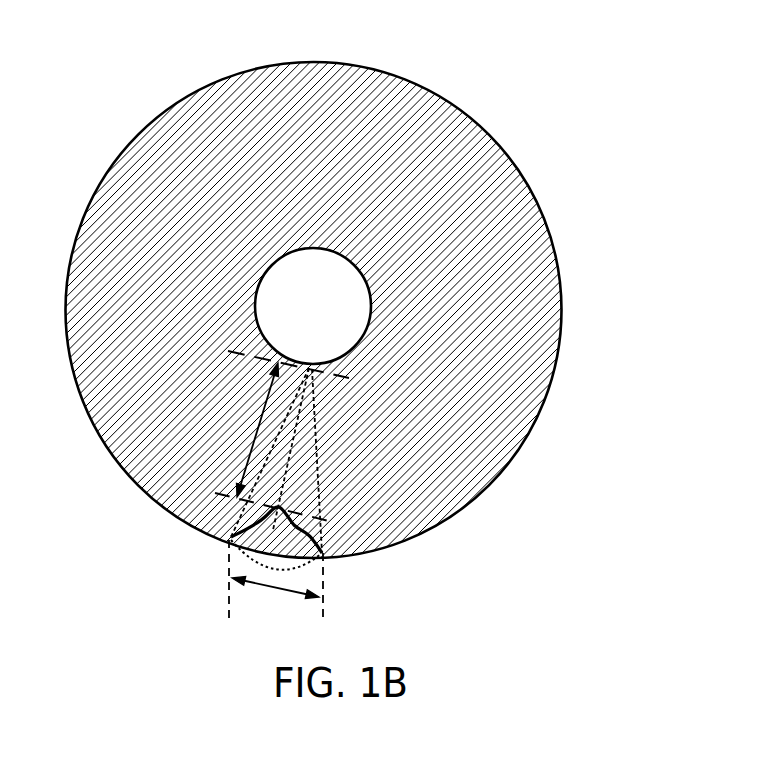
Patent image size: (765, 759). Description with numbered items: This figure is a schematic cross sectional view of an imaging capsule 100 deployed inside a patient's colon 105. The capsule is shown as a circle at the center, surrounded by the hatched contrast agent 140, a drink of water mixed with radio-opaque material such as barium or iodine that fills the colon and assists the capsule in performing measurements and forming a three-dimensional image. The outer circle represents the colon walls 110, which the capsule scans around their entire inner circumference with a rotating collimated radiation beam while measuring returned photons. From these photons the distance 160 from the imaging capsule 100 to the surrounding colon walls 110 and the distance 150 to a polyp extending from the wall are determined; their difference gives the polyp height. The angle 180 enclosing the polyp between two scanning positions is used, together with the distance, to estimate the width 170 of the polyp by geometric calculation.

The imaging capsule 100 is at (371, 309).
The colon 105 is at (382, 379).
The colon walls 110 is at (548, 222).
The contrast agent 140 is at (333, 160).
The distance to polyp 150 is at (250, 450).
The distance to colon walls 160 is at (287, 466).
The width of polyp 170 is at (272, 587).
The angle enclosing polyp 180 is at (285, 427).